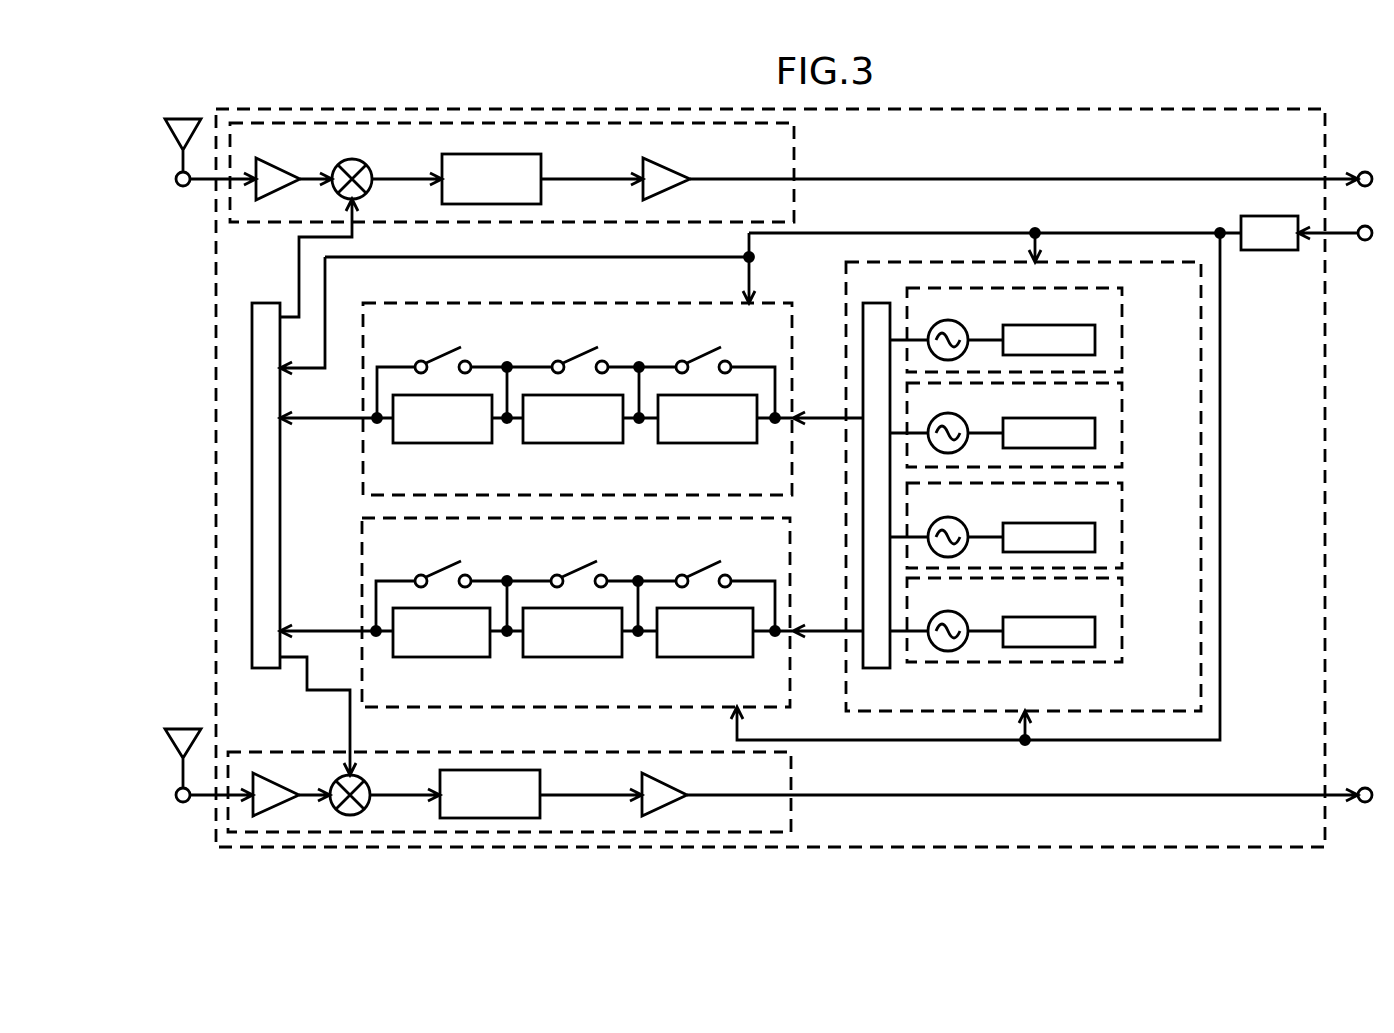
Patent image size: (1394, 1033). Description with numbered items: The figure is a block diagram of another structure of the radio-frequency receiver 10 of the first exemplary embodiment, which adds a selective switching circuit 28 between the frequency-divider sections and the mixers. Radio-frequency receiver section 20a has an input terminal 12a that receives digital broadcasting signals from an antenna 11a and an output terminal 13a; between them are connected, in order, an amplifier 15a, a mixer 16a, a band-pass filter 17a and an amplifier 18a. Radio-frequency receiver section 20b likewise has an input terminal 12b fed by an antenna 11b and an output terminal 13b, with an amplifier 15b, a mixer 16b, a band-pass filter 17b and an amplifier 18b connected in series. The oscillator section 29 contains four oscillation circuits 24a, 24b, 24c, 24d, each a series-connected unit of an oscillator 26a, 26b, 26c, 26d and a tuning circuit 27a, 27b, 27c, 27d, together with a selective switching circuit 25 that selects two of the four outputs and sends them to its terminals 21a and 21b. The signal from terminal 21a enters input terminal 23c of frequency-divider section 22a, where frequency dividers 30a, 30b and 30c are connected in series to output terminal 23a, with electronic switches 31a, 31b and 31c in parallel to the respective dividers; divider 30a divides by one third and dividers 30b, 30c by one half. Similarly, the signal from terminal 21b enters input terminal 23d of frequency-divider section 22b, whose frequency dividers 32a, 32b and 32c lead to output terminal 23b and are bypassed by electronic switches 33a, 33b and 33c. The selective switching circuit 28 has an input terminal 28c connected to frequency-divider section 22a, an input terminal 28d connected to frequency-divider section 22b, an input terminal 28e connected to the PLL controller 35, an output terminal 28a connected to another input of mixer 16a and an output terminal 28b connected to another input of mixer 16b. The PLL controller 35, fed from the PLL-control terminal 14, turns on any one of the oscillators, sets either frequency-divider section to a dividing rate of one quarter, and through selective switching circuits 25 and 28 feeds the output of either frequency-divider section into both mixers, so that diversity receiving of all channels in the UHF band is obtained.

The radio-frequency receiver 10 is at (1262, 110).
The antenna 11a is at (180, 117).
The antenna 11b is at (178, 727).
The input terminal 12a is at (186, 187).
The input terminal 12b is at (177, 803).
The output terminal 13a is at (1365, 172).
The output terminal 13b is at (1365, 788).
The PLL-control terminal 14 is at (1365, 245).
The amplifier 15a is at (272, 167).
The amplifier 15b is at (273, 785).
The mixer 16a is at (363, 165).
The mixer 16b is at (370, 787).
The band-pass filter 17a is at (545, 166).
The band-pass filter 17b is at (541, 786).
The amplifier 18a is at (670, 167).
The amplifier 18b is at (665, 786).
The radio-frequency receiver section 20a is at (255, 222).
The radio-frequency receiver section 20b is at (242, 750).
The terminal 21a is at (843, 420).
The terminal 21b is at (842, 633).
The frequency-divider section 22a is at (483, 302).
The frequency-divider section 22b is at (488, 708).
The output terminal 23a is at (363, 420).
The output terminal 23b is at (360, 630).
The input terminal 23c is at (797, 413).
The input terminal 23d is at (793, 628).
The oscillation circuit 24a is at (1123, 323).
The oscillation circuit 24b is at (1123, 416).
The oscillation circuit 24c is at (1123, 520).
The oscillation circuit 24d is at (1123, 614).
The selective switching circuit 25 is at (873, 668).
The oscillator 26a is at (968, 325).
The oscillator 26b is at (968, 418).
The oscillator 26c is at (968, 522).
The oscillator 26d is at (968, 616).
The tuning circuit 27a is at (1040, 325).
The tuning circuit 27b is at (1040, 418).
The tuning circuit 27c is at (1040, 522).
The tuning circuit 27d is at (1040, 616).
The selective switching circuit 28 is at (281, 517).
The output terminal 28a is at (292, 313).
The output terminal 28b is at (295, 662).
The input terminal 28c is at (285, 422).
The input terminal 28d is at (287, 627).
The input terminal 28e is at (285, 378).
The oscillator section 29 is at (843, 300).
The frequency divider 30a is at (703, 444).
The frequency divider 30b is at (573, 444).
The frequency divider 30c is at (443, 444).
The electronic switch 31a is at (707, 352).
The electronic switch 31b is at (585, 352).
The electronic switch 31c is at (448, 352).
The frequency divider 32a is at (703, 658).
The frequency divider 32b is at (573, 658).
The frequency divider 32c is at (442, 658).
The electronic switch 33a is at (707, 566).
The electronic switch 33b is at (585, 566).
The electronic switch 33c is at (448, 566).
The PLL controller 35 is at (1270, 252).